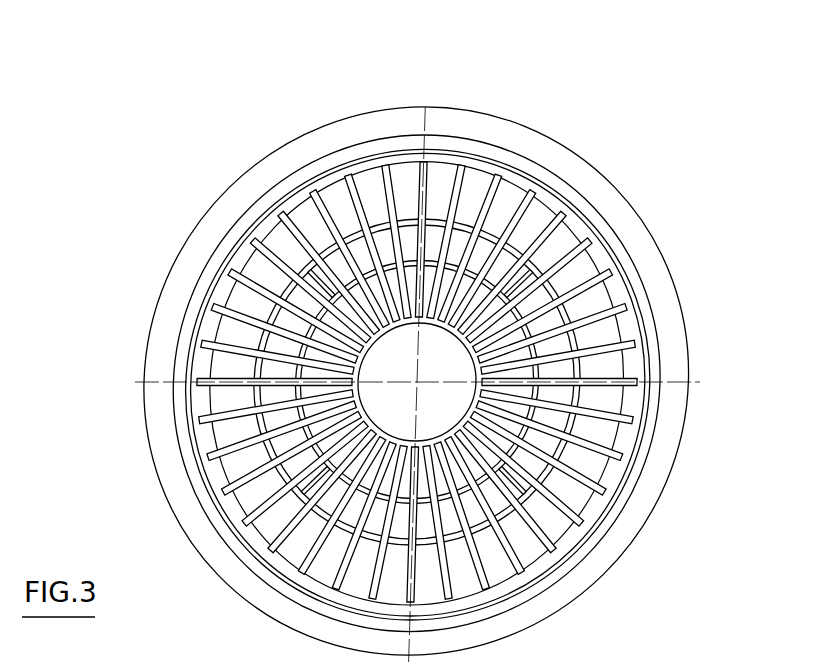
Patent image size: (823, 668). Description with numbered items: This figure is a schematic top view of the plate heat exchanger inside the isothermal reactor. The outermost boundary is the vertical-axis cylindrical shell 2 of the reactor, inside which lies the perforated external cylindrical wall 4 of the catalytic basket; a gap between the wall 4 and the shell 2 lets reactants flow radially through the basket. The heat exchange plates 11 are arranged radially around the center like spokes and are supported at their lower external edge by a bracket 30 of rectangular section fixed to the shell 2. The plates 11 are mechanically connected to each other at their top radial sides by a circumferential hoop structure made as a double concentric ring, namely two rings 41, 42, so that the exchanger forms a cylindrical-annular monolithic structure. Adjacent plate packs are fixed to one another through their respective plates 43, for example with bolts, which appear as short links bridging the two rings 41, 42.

The cylindrical shell 2 is at (628, 537).
The external cylindrical wall 4 is at (643, 422).
The heat exchange plate 11 is at (495, 193).
The bracket 30 is at (618, 475).
The ring 41 is at (492, 283).
The ring 42 is at (604, 315).
The plate 43 is at (520, 283).